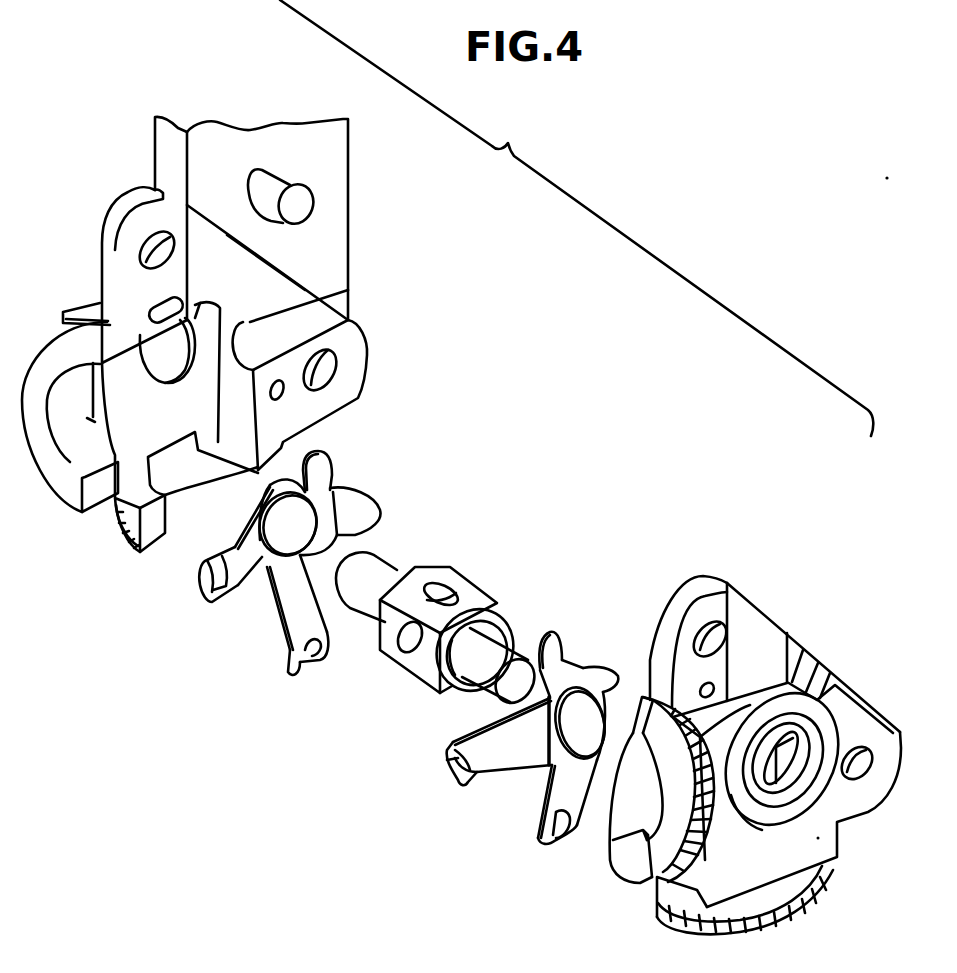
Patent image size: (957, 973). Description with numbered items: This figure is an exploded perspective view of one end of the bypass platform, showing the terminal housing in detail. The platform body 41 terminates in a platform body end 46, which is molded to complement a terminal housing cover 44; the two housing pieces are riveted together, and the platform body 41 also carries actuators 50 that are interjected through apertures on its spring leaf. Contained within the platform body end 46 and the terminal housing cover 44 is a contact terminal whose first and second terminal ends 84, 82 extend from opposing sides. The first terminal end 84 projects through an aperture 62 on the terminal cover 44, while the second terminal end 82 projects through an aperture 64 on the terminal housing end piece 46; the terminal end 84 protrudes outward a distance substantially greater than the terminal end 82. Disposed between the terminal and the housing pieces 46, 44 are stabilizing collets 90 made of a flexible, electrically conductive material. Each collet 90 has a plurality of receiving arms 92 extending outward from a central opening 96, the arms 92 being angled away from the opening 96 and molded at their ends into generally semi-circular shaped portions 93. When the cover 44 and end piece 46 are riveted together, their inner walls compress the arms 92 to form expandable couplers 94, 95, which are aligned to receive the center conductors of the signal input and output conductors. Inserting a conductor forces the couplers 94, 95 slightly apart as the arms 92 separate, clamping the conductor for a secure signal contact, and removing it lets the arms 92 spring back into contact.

The platform body 41 is at (349, 132).
The actuator 50 is at (349, 203).
The aperture 64 is at (176, 367).
The platform body end 46 is at (43, 487).
The stabilizing collet 90 is at (352, 482).
The receiving arm 92 is at (232, 547).
The semi-circular shaped portion 93 is at (200, 593).
The expandable coupler 94 is at (186, 592).
The expandable coupler 95 is at (530, 834).
The central opening 96 is at (304, 536).
The second terminal end 82 is at (352, 605).
The first terminal end 84 is at (492, 693).
The aperture 62 is at (787, 777).
The terminal housing cover 44 is at (785, 920).